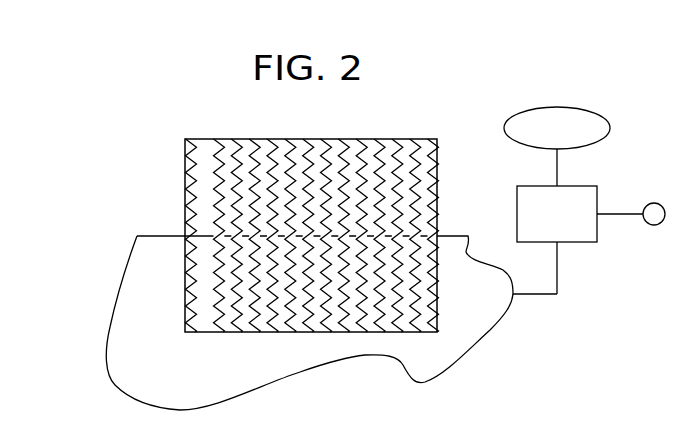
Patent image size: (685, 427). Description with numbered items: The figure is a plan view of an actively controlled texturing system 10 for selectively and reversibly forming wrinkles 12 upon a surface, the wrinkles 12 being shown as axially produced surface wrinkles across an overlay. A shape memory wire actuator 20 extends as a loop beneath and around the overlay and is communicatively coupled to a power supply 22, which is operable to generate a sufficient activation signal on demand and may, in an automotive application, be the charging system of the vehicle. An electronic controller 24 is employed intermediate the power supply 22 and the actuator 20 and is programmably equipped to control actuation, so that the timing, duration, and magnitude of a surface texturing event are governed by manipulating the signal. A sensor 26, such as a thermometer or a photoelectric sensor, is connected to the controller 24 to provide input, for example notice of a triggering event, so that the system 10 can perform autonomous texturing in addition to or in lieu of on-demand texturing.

The system 10 is at (186, 98).
The wrinkles 12 is at (185, 143).
The actuator 20 is at (163, 236).
The power supply 22 is at (583, 105).
The electronic controller 24 is at (580, 240).
The sensor 26 is at (665, 214).